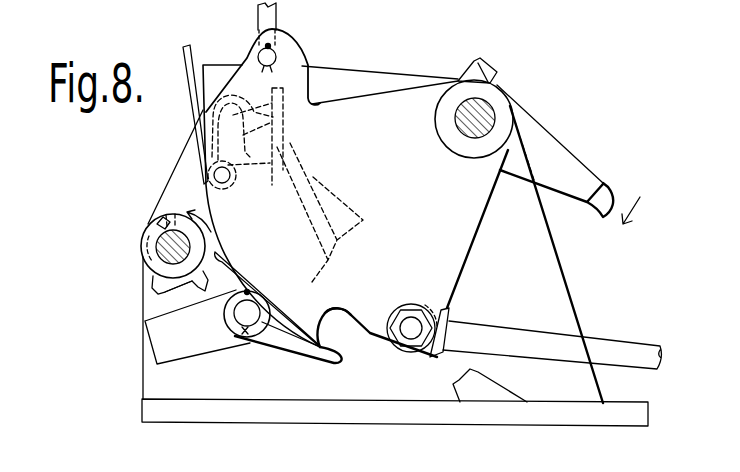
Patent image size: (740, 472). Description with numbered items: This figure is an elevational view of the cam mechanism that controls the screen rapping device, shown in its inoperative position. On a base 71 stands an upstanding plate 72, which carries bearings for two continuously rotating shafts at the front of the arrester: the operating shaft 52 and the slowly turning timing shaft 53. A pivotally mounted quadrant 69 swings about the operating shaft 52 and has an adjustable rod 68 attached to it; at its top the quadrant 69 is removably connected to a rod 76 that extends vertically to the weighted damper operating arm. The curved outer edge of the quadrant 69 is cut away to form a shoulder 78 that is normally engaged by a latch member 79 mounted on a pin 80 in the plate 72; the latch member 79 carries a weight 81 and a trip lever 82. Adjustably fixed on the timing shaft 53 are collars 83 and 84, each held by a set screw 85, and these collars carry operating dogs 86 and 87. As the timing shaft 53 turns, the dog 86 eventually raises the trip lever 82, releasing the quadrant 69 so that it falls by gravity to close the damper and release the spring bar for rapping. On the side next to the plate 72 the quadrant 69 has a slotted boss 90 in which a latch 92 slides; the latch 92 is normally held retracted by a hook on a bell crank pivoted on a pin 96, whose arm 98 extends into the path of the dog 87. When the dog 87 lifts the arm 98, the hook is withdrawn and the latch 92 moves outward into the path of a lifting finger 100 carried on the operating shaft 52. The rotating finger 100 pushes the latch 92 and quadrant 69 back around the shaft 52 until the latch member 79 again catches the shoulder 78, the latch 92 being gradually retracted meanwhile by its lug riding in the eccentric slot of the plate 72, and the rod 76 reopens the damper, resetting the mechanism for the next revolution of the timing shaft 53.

The operating shaft 52 is at (483, 111).
The timing shaft 53 is at (168, 241).
The adjustable rod 68 is at (628, 348).
The quadrant 69 is at (466, 222).
The base 71 is at (578, 425).
The upstanding plate 72 is at (556, 286).
The rod 76 is at (277, 15).
The shoulder 78 is at (317, 318).
The latch member 79 is at (292, 350).
The pin 80 is at (245, 328).
The weight 81 is at (196, 347).
The trip lever 82 is at (224, 262).
The collar 83 is at (150, 262).
The collar 84 is at (160, 222).
The set screw 85 is at (180, 200).
The operating dog 86 is at (182, 295).
The operating dog 87 is at (156, 287).
The slotted boss 90 is at (252, 115).
The latch 92 is at (283, 137).
The pin 96 is at (222, 183).
The arm 98 is at (188, 49).
The lifting finger 100 is at (580, 166).